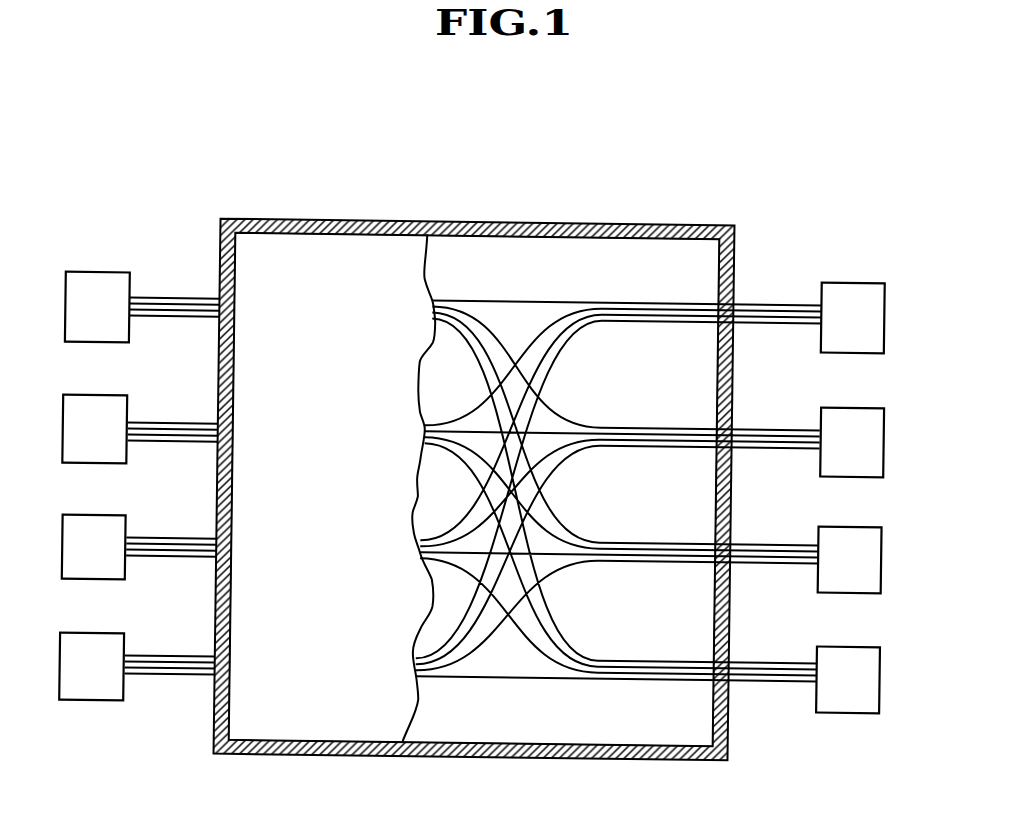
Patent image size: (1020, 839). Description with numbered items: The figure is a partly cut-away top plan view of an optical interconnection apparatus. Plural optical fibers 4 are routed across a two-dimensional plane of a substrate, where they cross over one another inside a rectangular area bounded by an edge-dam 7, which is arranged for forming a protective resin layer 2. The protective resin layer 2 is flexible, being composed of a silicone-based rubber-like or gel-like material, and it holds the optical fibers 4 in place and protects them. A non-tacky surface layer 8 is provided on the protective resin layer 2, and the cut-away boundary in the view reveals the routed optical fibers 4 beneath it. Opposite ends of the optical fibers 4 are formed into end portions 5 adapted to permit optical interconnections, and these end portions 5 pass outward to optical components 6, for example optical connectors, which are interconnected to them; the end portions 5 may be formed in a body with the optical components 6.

The protective resin layer 2 is at (260, 238).
The optical fibers 4 is at (592, 303).
The end portions 5 is at (787, 300).
The optical components 6 is at (852, 300).
The edge-dam 7 is at (648, 222).
The non-tacky surface layer 8 is at (457, 260).